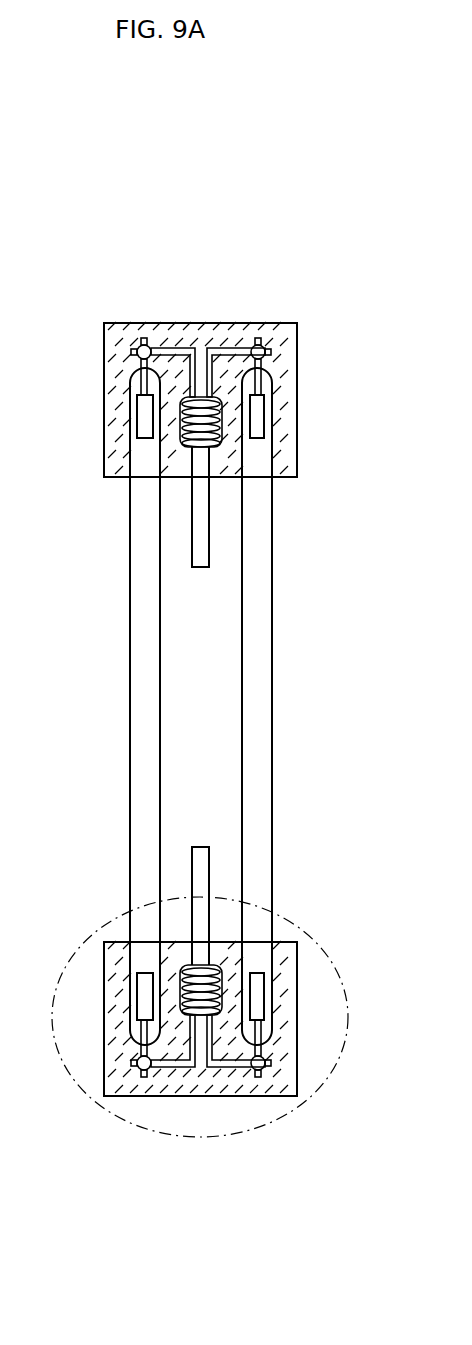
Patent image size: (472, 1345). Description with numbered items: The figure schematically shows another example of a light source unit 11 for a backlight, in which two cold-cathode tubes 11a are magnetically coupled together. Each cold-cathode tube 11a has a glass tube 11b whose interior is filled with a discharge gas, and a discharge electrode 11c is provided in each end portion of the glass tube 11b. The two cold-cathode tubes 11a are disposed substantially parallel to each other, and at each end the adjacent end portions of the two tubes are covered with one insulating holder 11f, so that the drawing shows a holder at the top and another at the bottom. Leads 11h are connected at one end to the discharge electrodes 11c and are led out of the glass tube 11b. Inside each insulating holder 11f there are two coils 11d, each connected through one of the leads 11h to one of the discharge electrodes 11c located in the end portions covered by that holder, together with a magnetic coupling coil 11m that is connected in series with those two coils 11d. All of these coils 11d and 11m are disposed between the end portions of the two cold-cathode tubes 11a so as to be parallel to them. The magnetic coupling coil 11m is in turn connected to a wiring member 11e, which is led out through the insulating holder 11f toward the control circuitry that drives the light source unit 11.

The light source unit 11 is at (115, 847).
The cold-cathode tube 11a is at (115, 757).
The glass tube 11b is at (130, 637).
The discharge electrode 11c is at (135, 432).
The coil 11d is at (185, 397).
The wiring member 11e is at (205, 556).
The insulating holder 11f is at (210, 345).
The lead 11h is at (141, 362).
The magnetic coupling coil 11m is at (173, 480).